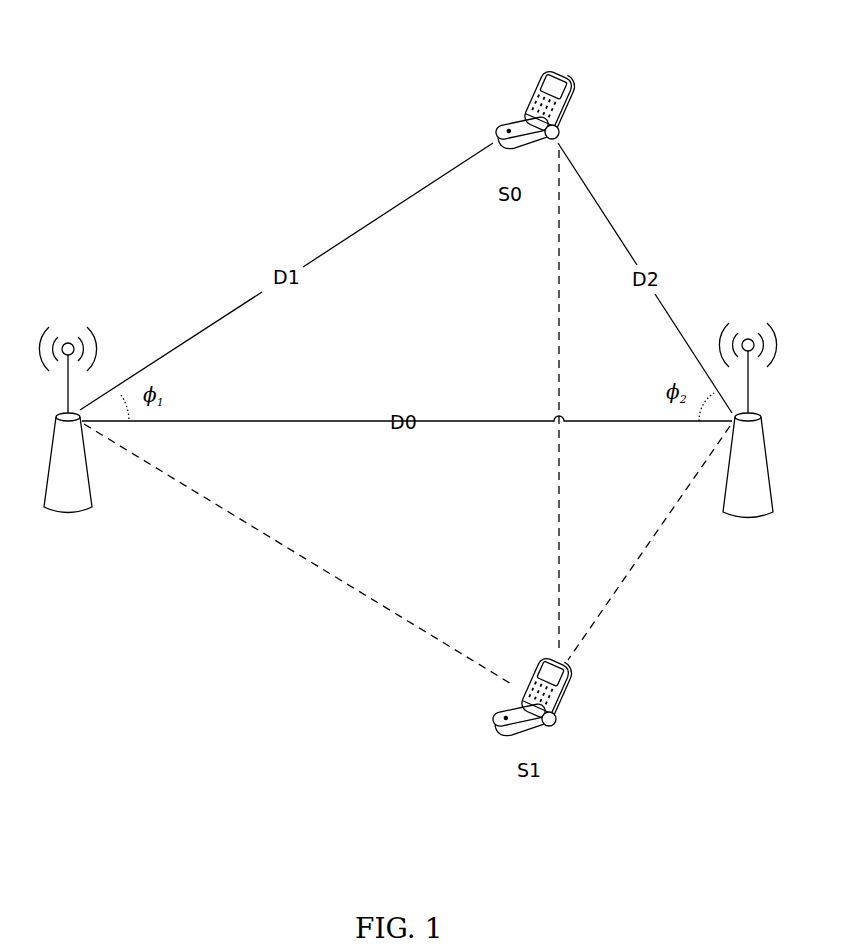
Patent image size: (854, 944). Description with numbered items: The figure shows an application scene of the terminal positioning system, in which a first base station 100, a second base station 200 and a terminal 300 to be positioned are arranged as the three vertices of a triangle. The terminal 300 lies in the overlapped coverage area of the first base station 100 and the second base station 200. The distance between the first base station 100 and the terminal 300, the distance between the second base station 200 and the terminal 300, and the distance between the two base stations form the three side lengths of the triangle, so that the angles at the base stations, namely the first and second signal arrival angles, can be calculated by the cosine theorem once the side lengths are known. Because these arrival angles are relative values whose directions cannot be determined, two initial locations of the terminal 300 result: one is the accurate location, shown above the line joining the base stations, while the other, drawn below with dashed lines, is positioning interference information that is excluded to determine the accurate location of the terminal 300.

The first base station 100 is at (68, 517).
The second base station 200 is at (757, 521).
The terminal 300 is at (546, 70).